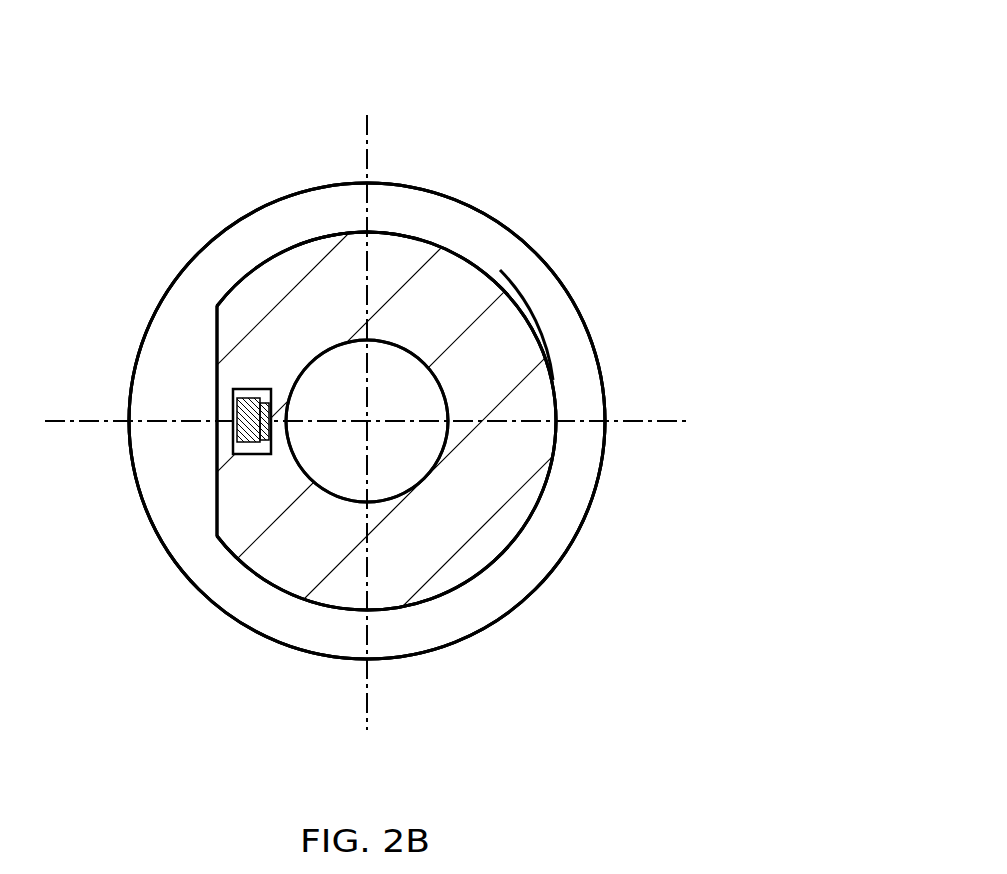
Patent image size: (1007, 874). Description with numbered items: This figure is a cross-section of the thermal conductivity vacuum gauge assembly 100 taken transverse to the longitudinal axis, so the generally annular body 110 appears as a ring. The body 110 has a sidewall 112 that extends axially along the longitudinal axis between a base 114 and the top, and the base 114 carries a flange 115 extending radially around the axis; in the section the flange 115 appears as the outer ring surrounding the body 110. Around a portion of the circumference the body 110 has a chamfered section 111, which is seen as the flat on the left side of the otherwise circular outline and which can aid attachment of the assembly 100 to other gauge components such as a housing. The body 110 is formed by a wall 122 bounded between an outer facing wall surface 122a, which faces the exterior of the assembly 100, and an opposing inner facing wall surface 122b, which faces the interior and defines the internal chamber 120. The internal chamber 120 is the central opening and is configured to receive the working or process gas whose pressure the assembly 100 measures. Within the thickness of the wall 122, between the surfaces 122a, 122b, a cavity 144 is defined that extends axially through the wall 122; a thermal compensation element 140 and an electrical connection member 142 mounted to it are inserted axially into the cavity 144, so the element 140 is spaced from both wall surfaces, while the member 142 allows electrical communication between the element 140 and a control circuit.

The thermal conductivity vacuum gauge assembly 100 is at (553, 97).
The body 110 is at (489, 271).
The chamfered section 111 is at (217, 338).
The sidewall 112 is at (342, 231).
The base 114 is at (424, 658).
The flange 115 is at (485, 607).
The internal chamber 120 is at (415, 457).
The wall 122 is at (513, 442).
The outer facing wall surface 122a is at (533, 326).
The inner facing wall surface 122b is at (445, 388).
The thermal compensation element 140 is at (233, 438).
The electrical connection member 142 is at (233, 405).
The cavity 144 is at (262, 456).